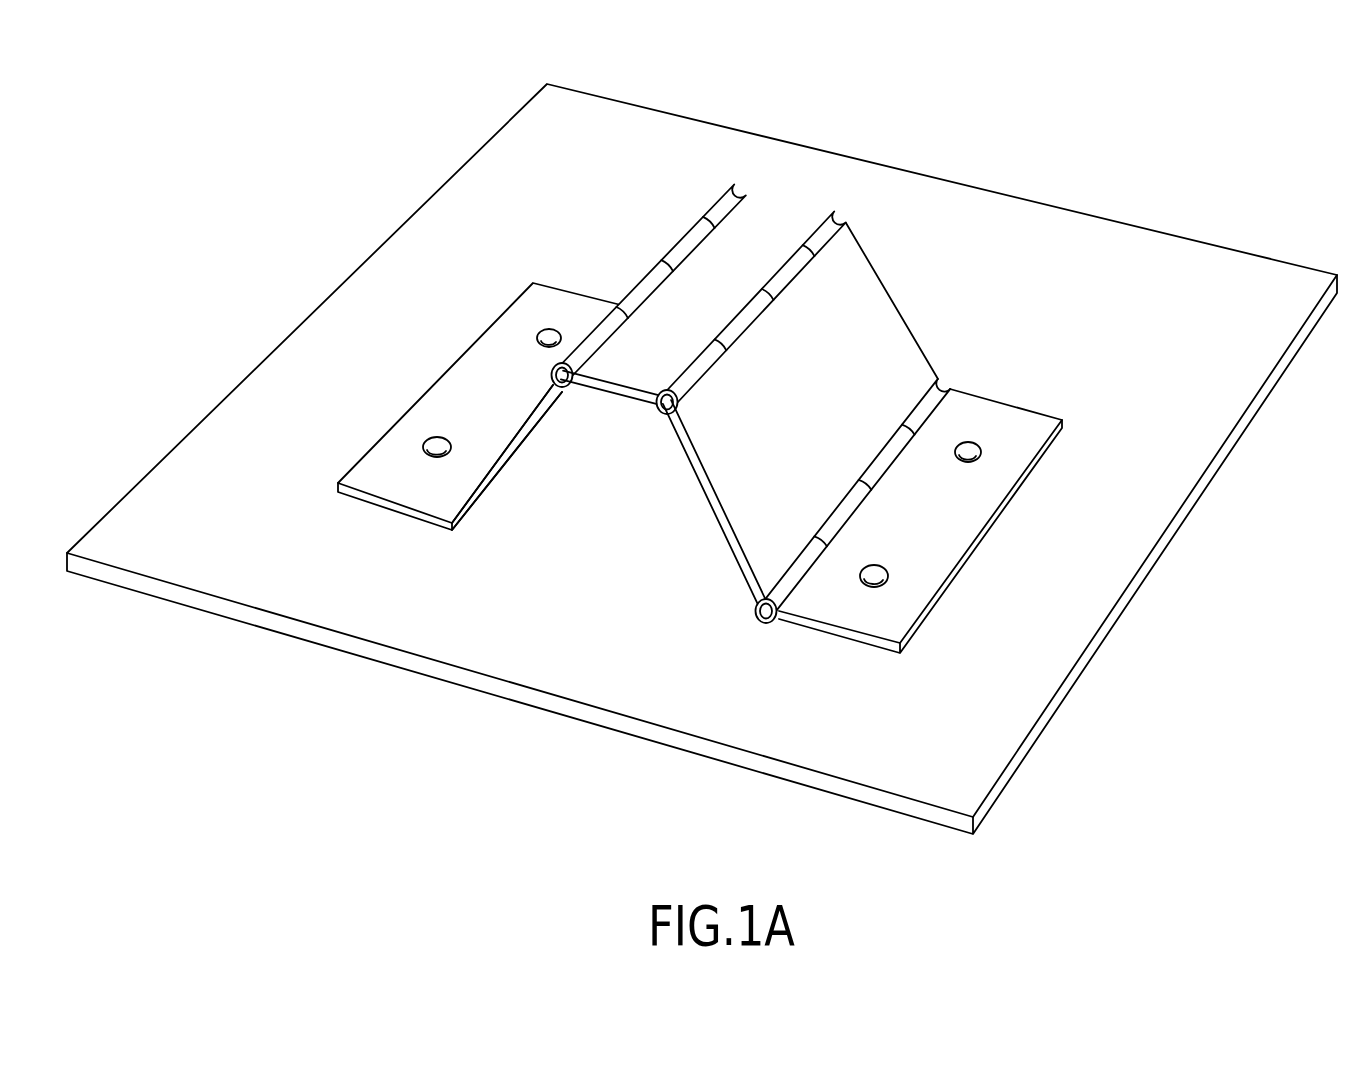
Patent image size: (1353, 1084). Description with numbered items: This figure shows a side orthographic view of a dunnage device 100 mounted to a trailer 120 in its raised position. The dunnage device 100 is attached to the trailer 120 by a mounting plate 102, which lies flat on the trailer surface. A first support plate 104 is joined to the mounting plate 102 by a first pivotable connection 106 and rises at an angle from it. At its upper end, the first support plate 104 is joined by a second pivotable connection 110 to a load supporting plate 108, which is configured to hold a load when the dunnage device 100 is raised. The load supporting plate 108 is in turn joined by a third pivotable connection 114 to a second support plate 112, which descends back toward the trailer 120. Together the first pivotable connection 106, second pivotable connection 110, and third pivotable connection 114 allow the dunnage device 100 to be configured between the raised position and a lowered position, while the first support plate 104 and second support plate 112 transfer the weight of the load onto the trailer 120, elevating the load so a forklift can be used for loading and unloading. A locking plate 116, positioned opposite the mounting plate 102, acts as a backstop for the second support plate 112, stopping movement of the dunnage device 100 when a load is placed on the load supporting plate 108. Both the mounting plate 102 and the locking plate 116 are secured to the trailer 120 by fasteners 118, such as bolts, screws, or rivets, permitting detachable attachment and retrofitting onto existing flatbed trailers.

The dunnage device 100 is at (248, 83).
The mounting plate 102 is at (965, 530).
The first support plate 104 is at (887, 305).
The first pivotable connection 106 is at (937, 390).
The load supporting plate 108 is at (780, 213).
The second pivotable connection 110 is at (832, 222).
The second support plate 112 is at (516, 434).
The third pivotable connection 114 is at (722, 202).
The locking plate 116 is at (372, 467).
The fasteners 118 is at (437, 440).
The trailer 120 is at (1025, 702).